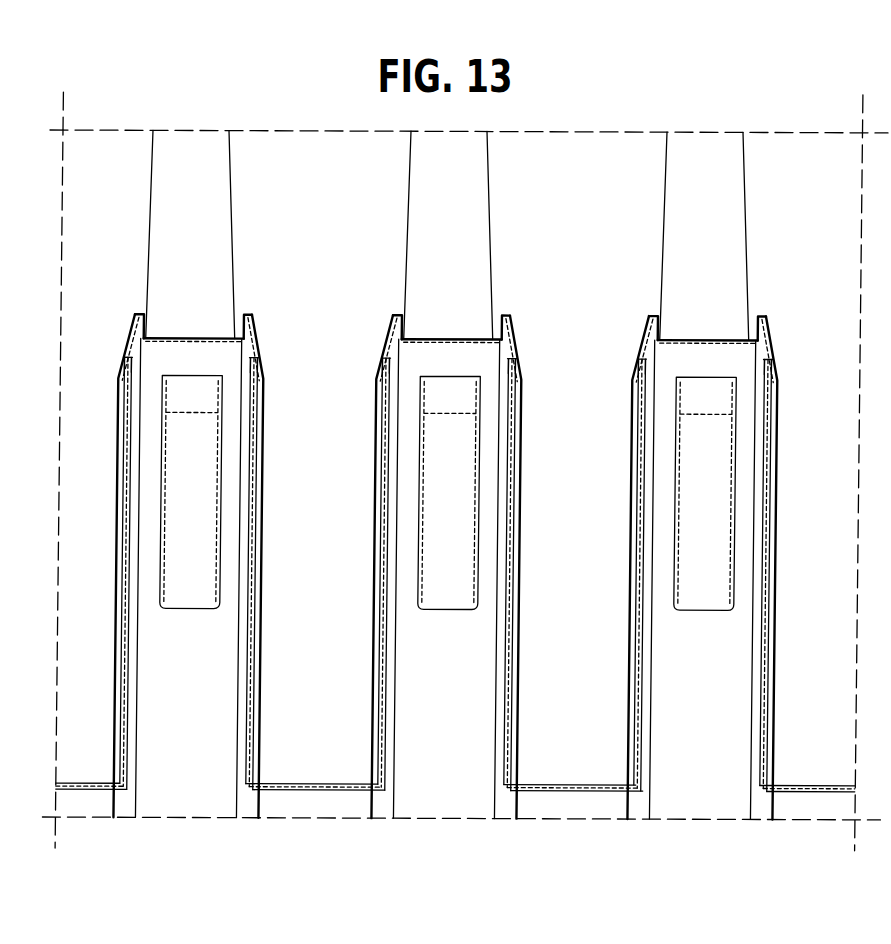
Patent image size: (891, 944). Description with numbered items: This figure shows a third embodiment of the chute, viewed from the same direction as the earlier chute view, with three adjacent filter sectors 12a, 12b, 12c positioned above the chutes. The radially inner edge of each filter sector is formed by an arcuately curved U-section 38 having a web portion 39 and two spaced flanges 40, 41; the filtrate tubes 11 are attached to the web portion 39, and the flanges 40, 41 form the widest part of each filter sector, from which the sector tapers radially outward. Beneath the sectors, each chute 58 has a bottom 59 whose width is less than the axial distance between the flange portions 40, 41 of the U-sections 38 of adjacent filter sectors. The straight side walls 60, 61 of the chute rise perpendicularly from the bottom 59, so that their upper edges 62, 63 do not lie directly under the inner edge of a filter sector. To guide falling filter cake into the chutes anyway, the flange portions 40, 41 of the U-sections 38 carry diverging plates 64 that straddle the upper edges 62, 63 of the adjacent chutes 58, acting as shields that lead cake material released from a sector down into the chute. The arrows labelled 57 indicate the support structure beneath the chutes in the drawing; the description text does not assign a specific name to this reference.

The filtrate tube 11 is at (447, 522).
The first container 12a is at (174, 221).
The second container 12b is at (432, 221).
The third container 12c is at (688, 221).
The U-section 38 is at (178, 798).
The web portion 39 is at (451, 322).
The flange 40 is at (393, 296).
The flange 41 is at (521, 297).
The support frame 57 is at (285, 800).
The chute 58 is at (455, 826).
The bottom 59 is at (509, 575).
The side wall 60 is at (383, 574).
The side wall 61 is at (485, 362).
The upper edge 62 is at (375, 392).
The upper edge 63 is at (358, 566).
The diverging plate 64 is at (537, 567).